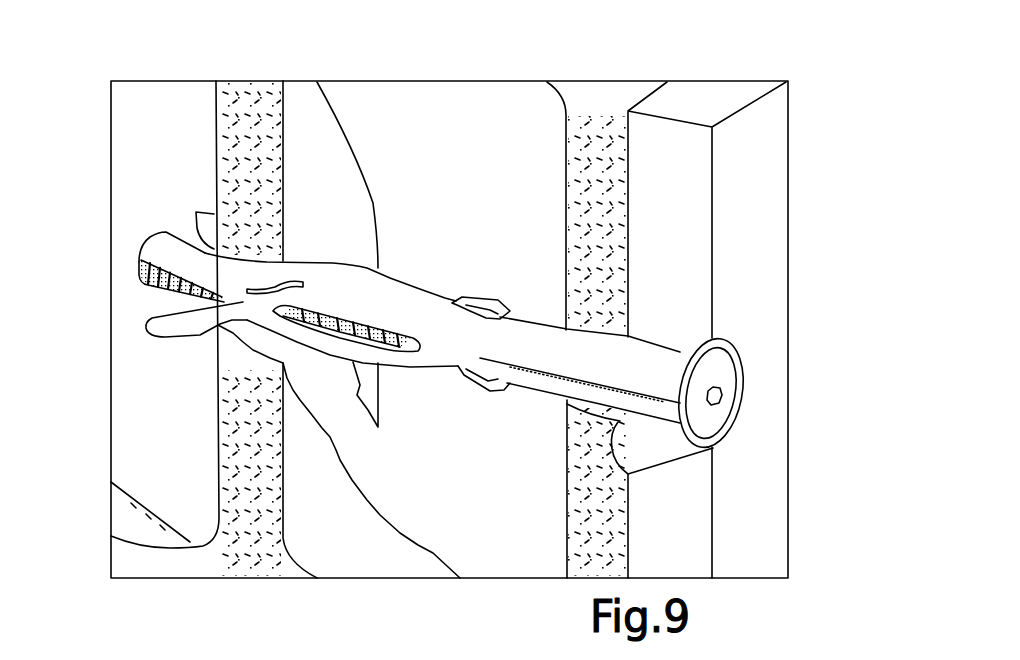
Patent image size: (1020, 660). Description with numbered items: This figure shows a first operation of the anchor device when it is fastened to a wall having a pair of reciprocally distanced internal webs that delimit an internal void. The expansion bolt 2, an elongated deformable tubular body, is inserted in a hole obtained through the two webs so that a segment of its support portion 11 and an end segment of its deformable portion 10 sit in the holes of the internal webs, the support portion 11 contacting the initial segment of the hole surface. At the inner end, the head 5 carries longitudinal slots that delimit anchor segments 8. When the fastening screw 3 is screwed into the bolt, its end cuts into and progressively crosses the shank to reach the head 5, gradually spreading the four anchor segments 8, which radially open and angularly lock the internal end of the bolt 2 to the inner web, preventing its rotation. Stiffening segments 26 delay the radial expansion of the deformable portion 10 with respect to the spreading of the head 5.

The expansion bolt 2 is at (540, 328).
The fastening screw 3 is at (724, 368).
The head 5 is at (150, 234).
The anchor segments 8 is at (201, 254).
The deformable portion 10 is at (266, 262).
The support portion 11 is at (603, 366).
The stiffening segments 26 is at (243, 298).